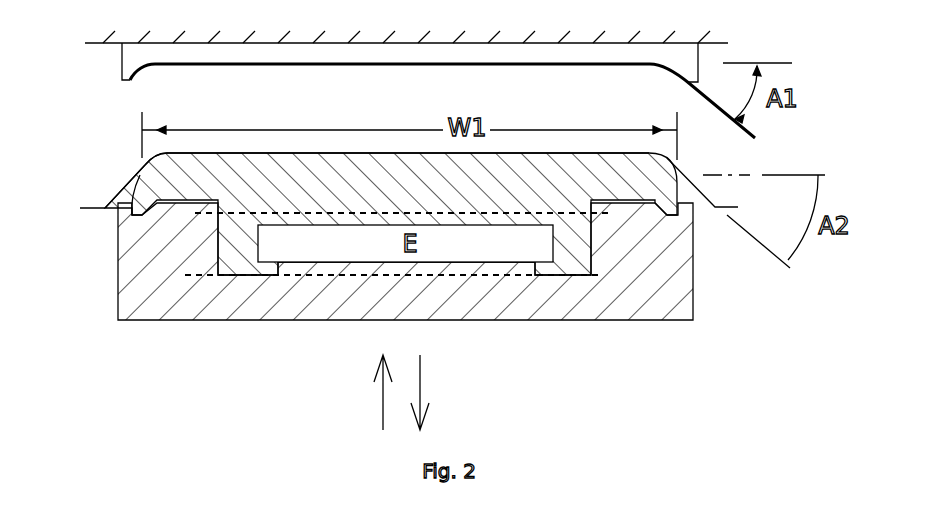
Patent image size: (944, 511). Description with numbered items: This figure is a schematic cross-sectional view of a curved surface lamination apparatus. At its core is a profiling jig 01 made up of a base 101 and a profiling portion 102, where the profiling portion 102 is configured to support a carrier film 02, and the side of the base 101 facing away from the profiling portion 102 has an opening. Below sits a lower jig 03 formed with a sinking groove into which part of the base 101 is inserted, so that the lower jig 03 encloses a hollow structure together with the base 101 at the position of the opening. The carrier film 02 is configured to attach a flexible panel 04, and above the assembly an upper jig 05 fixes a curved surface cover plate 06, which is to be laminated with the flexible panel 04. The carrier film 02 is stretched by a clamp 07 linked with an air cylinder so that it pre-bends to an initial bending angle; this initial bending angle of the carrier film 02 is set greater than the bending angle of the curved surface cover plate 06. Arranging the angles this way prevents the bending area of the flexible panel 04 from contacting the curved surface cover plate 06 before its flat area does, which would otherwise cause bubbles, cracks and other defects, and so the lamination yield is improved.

The profiling jig 01 is at (422, 168).
The carrier film 02 is at (117, 193).
The lower jig 03 is at (690, 293).
The flexible panel 04 is at (385, 168).
The upper jig 05 is at (121, 57).
The curved surface cover plate 06 is at (300, 67).
The clamp 07 is at (91, 213).
The base 101 is at (322, 214).
The profiling portion 102 is at (288, 155).